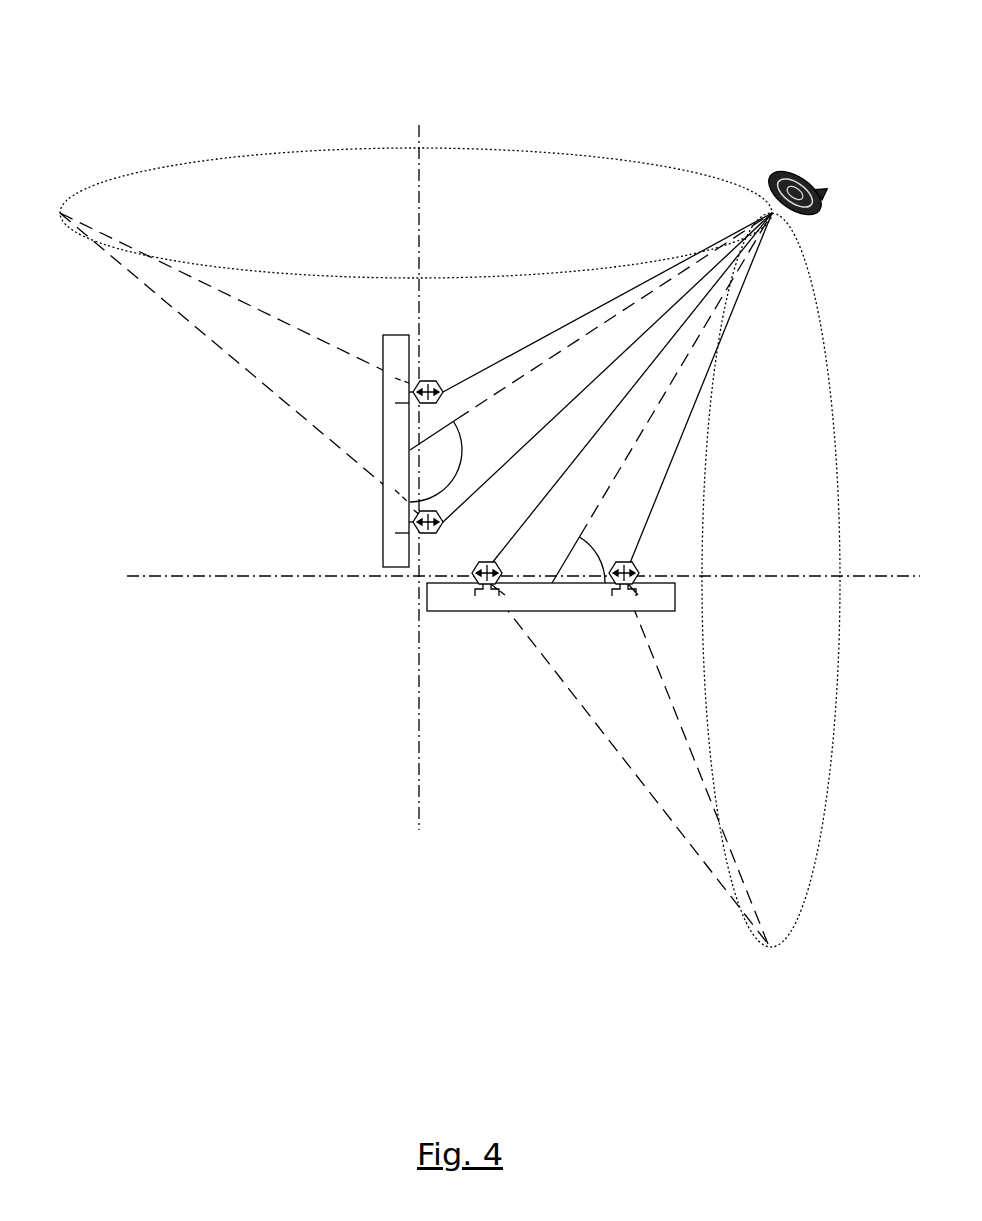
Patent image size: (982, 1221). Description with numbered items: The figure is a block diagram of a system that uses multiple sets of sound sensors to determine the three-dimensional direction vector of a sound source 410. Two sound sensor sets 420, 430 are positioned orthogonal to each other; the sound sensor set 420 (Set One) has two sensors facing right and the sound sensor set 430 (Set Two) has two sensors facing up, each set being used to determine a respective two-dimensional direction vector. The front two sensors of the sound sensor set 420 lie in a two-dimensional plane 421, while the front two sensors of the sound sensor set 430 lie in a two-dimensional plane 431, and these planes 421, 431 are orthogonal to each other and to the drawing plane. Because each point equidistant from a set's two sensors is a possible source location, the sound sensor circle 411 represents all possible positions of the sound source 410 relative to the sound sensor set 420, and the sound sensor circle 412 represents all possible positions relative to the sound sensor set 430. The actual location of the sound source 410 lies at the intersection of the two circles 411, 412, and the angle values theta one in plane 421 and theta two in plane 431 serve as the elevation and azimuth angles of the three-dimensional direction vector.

The sound source 410 is at (763, 173).
The sound sensor circle 411 is at (307, 150).
The sound sensor circle 412 is at (795, 923).
The sound sensor set 420 is at (383, 512).
The two-dimensional plane 421 is at (405, 800).
The sound sensor set 430 is at (442, 612).
The two-dimensional plane 431 is at (190, 593).